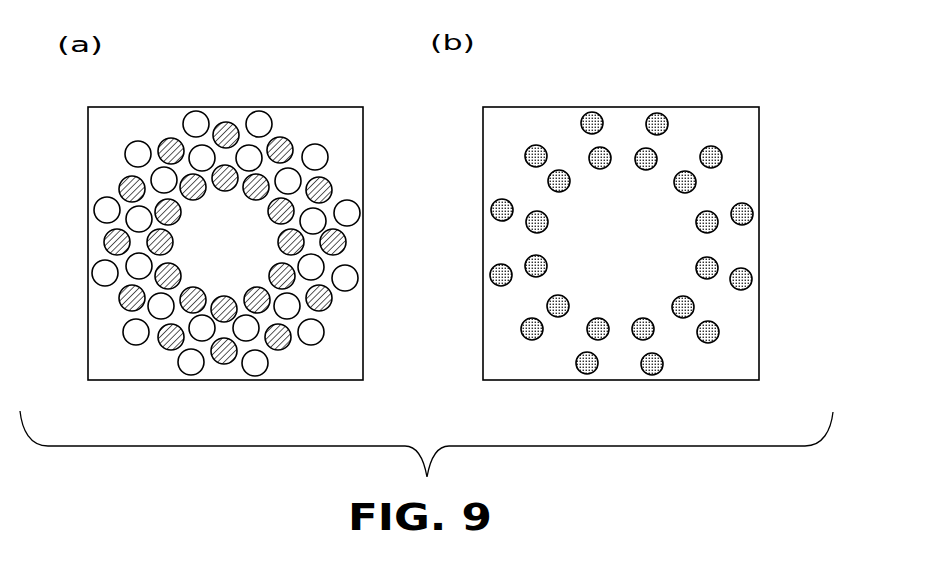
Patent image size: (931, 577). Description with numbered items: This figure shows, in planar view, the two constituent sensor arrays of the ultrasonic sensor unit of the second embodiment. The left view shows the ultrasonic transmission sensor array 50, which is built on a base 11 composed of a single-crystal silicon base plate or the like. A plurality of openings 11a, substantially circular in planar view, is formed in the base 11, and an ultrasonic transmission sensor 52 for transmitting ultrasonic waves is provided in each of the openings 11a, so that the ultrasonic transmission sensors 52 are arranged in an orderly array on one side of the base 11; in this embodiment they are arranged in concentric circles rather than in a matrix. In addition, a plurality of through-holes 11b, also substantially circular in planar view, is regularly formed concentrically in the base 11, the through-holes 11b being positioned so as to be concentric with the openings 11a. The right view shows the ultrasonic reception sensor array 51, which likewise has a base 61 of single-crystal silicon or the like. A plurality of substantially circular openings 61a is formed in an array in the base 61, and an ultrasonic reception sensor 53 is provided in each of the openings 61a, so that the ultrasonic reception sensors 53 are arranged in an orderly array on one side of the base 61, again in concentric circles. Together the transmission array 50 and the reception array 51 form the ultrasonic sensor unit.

The ultrasonic transmission sensor array 50 is at (329, 90).
The base 11 is at (165, 107).
The openings 11a is at (277, 146).
The through-holes 11b is at (304, 152).
The ultrasonic transmission sensor 52 is at (337, 244).
The ultrasonic reception sensor array 51 is at (762, 90).
The base 61 is at (689, 107).
The openings 61a is at (594, 163).
The ultrasonic reception sensor 53 is at (692, 185).